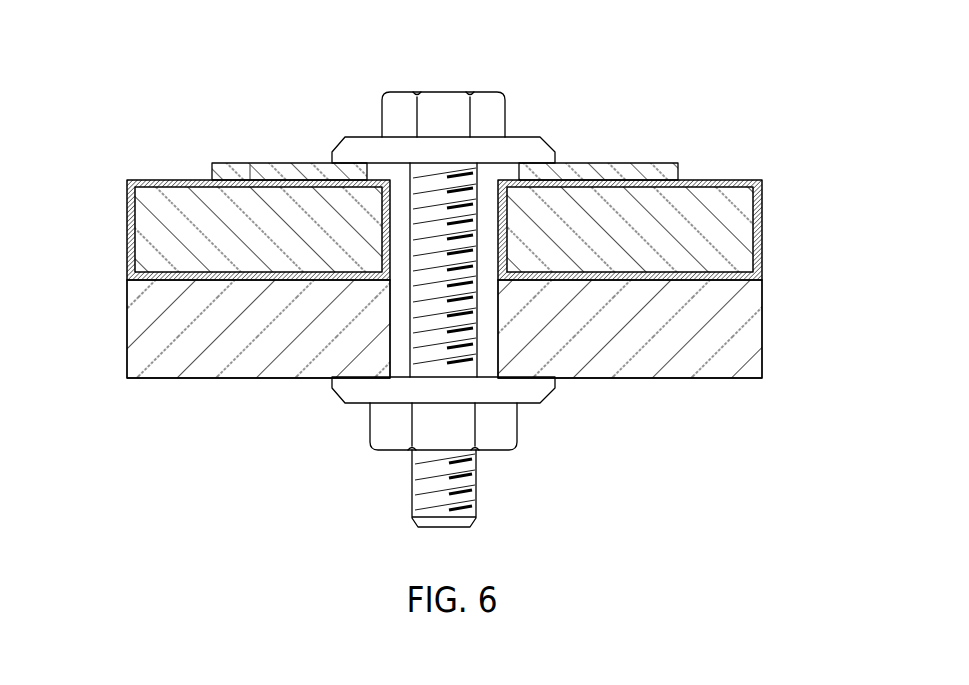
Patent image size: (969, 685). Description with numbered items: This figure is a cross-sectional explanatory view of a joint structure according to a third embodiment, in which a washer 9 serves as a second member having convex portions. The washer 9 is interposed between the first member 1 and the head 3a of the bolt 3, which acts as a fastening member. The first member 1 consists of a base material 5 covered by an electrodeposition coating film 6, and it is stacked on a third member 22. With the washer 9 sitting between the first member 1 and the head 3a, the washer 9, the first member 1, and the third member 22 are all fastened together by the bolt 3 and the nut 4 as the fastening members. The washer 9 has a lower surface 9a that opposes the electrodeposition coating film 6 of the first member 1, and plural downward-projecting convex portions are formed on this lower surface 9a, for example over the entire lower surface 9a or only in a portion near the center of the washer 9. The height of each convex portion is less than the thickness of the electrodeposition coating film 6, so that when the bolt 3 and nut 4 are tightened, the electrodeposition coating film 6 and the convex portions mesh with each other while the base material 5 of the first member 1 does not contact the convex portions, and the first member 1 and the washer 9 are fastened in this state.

The first member 1 is at (772, 157).
The bolt 3 is at (465, 230).
The head 3a is at (445, 108).
The nut 4 is at (392, 442).
The base material 5 is at (175, 222).
The electrodeposition coating film 6 is at (128, 252).
The washer 9 is at (233, 175).
The lower surface 9a is at (250, 183).
The third member 22 is at (718, 332).